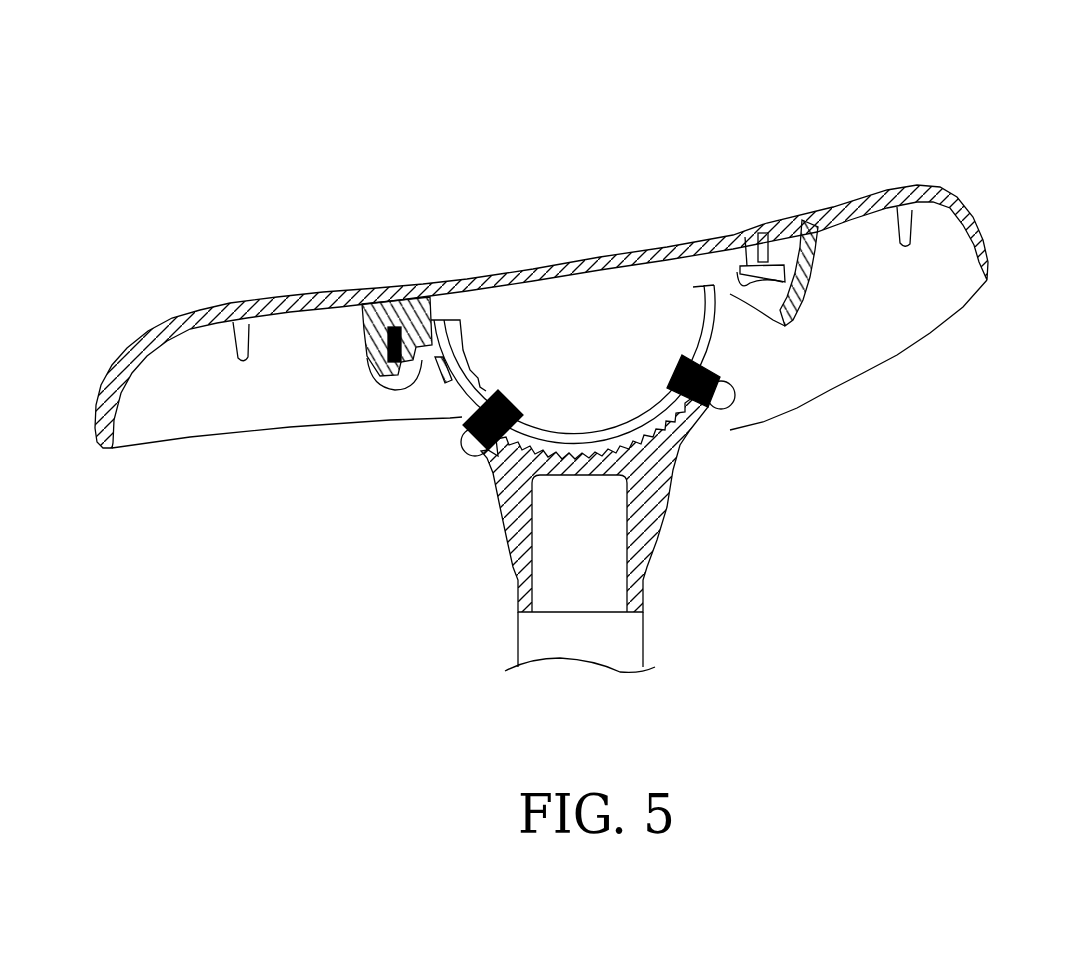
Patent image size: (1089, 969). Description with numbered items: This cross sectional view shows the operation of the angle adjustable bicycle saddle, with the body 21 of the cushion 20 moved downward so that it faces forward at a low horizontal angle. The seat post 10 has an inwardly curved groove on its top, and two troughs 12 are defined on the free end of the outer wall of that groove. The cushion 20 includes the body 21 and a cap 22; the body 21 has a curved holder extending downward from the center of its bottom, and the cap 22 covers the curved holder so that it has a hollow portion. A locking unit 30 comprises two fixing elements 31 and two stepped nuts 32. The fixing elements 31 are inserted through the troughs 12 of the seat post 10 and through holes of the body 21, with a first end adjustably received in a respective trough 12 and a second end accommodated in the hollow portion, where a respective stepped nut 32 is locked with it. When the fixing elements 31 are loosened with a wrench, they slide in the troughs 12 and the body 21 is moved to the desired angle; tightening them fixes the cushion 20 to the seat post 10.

The seat post 10 is at (636, 478).
The troughs 12 is at (487, 457).
The cushion 20 is at (587, 253).
The body 21 is at (953, 207).
The cap 22 is at (543, 277).
The locking unit 30 is at (616, 411).
The fixing elements 31 is at (467, 441).
The stepped nuts 32 is at (510, 427).